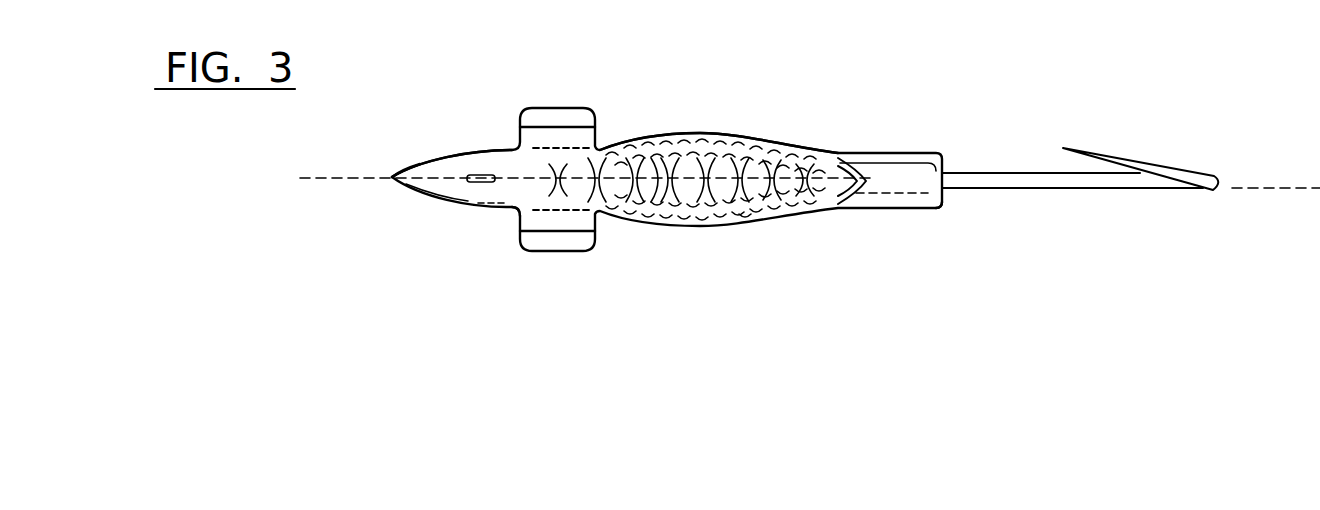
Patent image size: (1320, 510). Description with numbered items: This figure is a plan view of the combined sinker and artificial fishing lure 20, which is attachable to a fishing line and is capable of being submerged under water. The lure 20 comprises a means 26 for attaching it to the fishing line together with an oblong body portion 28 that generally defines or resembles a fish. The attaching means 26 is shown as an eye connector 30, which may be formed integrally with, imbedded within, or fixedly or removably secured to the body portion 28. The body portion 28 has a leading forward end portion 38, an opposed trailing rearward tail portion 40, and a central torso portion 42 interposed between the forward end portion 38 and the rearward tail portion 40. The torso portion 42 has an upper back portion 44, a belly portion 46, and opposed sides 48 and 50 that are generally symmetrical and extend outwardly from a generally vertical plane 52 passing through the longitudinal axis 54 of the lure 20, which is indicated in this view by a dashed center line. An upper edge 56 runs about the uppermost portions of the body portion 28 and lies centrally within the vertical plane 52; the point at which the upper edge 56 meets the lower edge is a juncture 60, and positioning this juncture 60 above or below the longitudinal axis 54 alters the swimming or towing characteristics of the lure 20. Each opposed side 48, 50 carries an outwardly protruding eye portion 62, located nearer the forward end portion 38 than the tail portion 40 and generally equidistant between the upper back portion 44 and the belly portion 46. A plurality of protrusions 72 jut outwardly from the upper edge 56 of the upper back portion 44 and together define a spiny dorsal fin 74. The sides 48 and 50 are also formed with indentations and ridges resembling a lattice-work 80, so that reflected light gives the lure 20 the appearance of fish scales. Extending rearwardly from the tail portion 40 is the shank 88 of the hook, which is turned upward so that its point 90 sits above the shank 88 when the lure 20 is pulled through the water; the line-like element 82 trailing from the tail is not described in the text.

The combined sinker and artificial fishing lure 20 is at (934, 124).
The means for attaching 26 is at (467, 200).
The oblong body portion 28 is at (822, 218).
The eye connector 30 is at (473, 174).
The forward end portion 38 is at (406, 166).
The rearward tail portion 40 is at (937, 213).
The torso portion 42 is at (684, 242).
The upper back portion 44 is at (718, 226).
The belly portion 46 is at (698, 137).
The opposed side 48 is at (656, 226).
The opposed side 50 is at (646, 135).
The vertical plane 52 is at (337, 178).
The longitudinal axis 54 is at (1257, 188).
The upper edge 56 is at (516, 210).
The juncture 60 is at (395, 181).
The eye portion 62 is at (556, 102).
The protrusions 72 is at (616, 165).
The spiny dorsal fin 74 is at (745, 219).
The lattice-work 80 is at (674, 118).
The cable lower edge 82 is at (1070, 194).
The shank 88 is at (996, 174).
The point 90 is at (1116, 157).